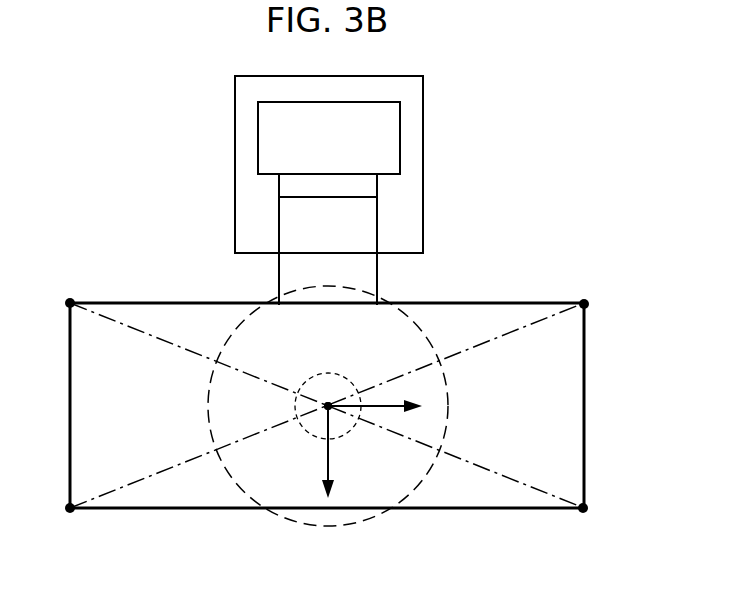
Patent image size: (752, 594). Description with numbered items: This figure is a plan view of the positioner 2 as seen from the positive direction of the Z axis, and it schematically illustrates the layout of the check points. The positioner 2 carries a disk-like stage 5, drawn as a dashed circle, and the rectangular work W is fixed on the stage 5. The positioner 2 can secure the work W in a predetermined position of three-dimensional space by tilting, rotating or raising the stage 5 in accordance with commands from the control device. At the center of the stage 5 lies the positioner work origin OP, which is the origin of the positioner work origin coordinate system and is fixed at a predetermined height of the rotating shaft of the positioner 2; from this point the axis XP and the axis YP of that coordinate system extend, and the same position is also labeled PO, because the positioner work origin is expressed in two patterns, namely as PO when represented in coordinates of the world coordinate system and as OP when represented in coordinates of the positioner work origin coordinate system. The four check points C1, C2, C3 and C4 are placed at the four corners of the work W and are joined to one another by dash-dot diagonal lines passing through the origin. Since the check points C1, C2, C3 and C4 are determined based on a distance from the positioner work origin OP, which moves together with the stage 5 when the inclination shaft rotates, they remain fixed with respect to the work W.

The positioner 2 is at (402, 138).
The stage 5 is at (442, 302).
The work W is at (585, 408).
The check point C1 is at (70, 512).
The check point C2 is at (583, 512).
The check point C3 is at (70, 300).
The check point C4 is at (586, 300).
The positioner work origin OP is at (328, 404).
The positioner work origin represented in world coordinates PO is at (328, 406).
The X axis of positioner work origin coordinate system XP is at (340, 453).
The Y axis of positioner work origin coordinate system YP is at (386, 407).